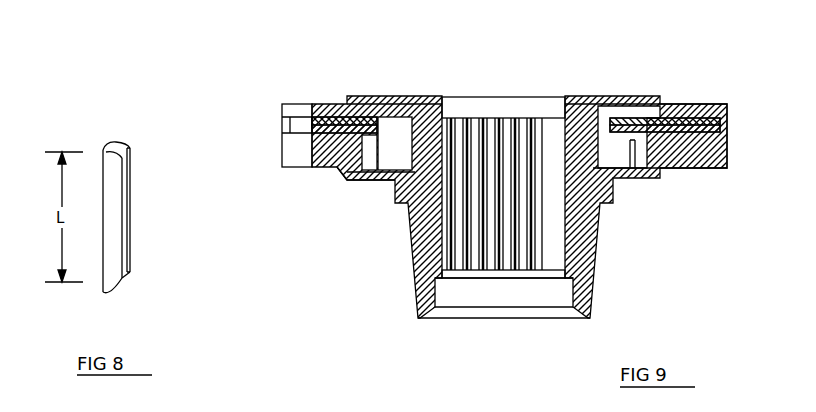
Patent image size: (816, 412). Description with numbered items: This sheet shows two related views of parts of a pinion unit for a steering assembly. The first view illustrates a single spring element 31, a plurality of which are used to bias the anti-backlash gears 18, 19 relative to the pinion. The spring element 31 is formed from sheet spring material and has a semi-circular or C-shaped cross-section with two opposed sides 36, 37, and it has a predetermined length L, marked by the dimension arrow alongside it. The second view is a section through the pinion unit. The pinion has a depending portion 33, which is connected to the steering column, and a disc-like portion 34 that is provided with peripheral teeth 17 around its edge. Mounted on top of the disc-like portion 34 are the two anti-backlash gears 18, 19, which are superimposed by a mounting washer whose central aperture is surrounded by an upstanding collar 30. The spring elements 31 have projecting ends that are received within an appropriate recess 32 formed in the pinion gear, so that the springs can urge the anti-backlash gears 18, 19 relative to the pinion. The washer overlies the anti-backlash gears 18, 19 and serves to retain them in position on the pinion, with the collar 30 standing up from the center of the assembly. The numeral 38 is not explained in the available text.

In FIG. 9, the peripheral teeth 17 is at (718, 168).
In FIG. 9, the anti-backlash gear 18 is at (310, 118).
In FIG. 9, the anti-backlash gear 19 is at (338, 107).
In FIG. 9, the upstanding collar 30 is at (437, 100).
In FIG. 8, the spring element 31 is at (156, 210).
In FIG. 9, the spring element 31 is at (615, 152).
In FIG. 9, the recess 32 is at (620, 180).
In FIG. 9, the depending portion 33 is at (597, 258).
In FIG. 9, the disc-like portion 34 is at (323, 165).
In FIG. 8, the opposed side 36 is at (127, 272).
In FIG. 8, the opposed side 37 is at (132, 152).
In FIG. 8, the slot of clip 38 is at (107, 177).